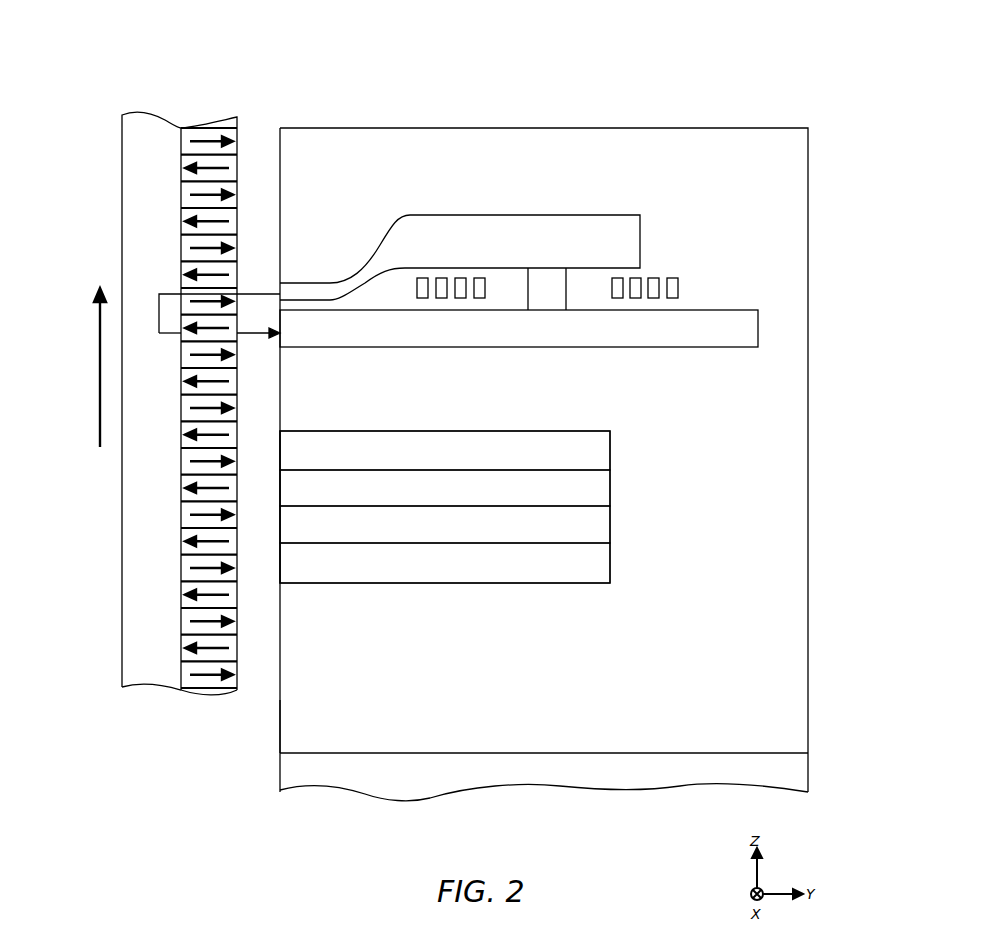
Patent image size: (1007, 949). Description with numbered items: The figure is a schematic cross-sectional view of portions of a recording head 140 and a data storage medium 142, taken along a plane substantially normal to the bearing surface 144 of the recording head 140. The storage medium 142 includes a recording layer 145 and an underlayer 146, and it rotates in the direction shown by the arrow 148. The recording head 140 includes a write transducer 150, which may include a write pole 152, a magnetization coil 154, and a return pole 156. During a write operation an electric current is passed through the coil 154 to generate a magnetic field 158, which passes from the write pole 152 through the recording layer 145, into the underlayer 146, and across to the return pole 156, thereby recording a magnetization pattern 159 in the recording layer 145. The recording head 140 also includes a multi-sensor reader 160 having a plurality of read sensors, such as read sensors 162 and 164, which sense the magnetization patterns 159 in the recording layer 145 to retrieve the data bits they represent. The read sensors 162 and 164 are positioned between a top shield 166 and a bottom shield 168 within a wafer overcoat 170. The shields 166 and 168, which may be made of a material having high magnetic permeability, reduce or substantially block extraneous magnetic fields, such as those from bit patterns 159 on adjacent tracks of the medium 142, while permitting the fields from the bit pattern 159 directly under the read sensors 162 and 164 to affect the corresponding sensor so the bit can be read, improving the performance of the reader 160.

The recording head 140 is at (665, 93).
The data storage medium 142 is at (160, 687).
The bearing surface 144 is at (280, 723).
The recording layer 145 is at (204, 126).
The underlayer 146 is at (135, 663).
The arrow 148 is at (99, 370).
The write transducer 150 is at (757, 221).
The write pole 152 is at (324, 283).
The magnetization coil 154 is at (459, 278).
The return pole 156 is at (463, 330).
The magnetic field 158 is at (167, 293).
The magnetization pattern 159 is at (214, 140).
The multi-sensor reader 160 is at (652, 555).
The read sensor 162 is at (575, 528).
The read sensor 164 is at (570, 485).
The top shield 166 is at (526, 453).
The bottom shield 168 is at (520, 560).
The wafer overcoat 170 is at (733, 413).